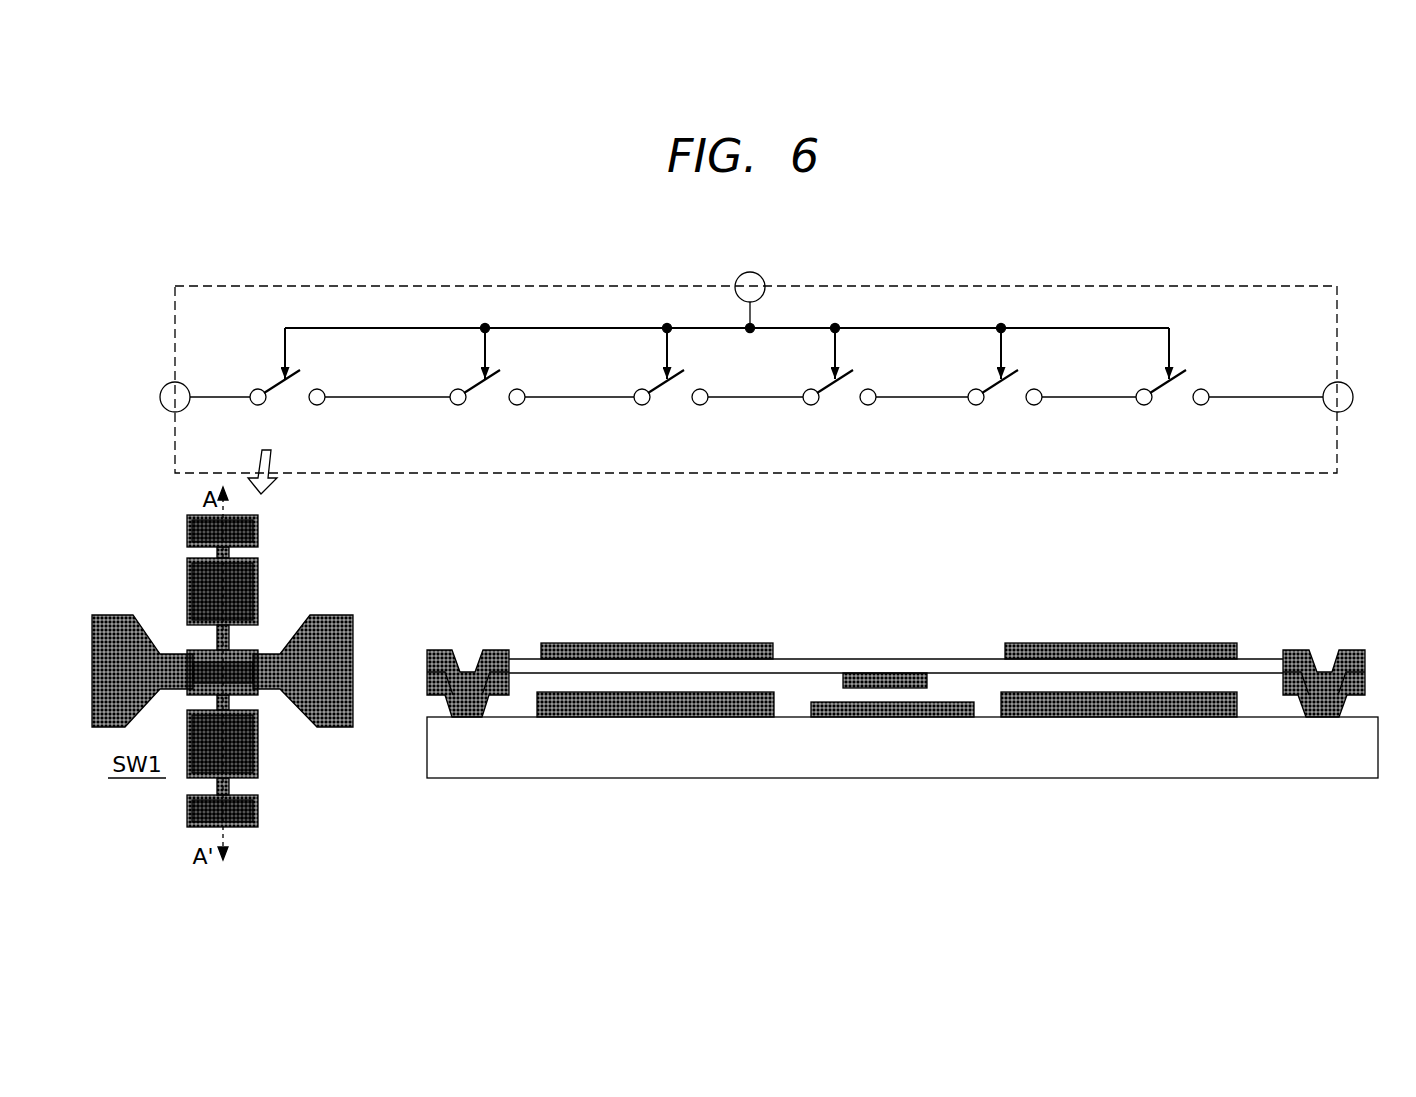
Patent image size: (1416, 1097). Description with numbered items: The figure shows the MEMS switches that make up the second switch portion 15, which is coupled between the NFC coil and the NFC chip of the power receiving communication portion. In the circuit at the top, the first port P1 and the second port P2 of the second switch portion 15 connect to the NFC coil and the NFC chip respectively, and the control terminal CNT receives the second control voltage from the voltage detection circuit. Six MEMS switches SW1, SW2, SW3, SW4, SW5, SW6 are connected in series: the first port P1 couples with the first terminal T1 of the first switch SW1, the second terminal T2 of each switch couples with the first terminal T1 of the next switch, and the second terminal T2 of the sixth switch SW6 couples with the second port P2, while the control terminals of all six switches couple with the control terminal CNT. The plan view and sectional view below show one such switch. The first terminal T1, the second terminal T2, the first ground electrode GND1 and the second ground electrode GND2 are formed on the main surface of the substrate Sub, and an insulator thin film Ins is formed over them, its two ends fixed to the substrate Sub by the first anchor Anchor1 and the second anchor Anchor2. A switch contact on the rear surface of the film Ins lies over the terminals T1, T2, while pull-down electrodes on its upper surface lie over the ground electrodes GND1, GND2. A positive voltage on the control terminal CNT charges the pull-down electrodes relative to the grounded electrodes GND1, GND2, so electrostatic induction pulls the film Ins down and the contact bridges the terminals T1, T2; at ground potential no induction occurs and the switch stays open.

The second switch portion 15 is at (1275, 287).
The control terminal CNT is at (758, 280).
The first port P1 is at (162, 406).
The second port P2 is at (1350, 411).
The first MEMS switch SW1 is at (287, 404).
The second MEMS switch SW2 is at (487, 404).
The third MEMS switch SW3 is at (671, 404).
The fourth MEMS switch SW4 is at (839, 404).
The fifth MEMS switch SW5 is at (1005, 404).
The sixth MEMS switch SW6 is at (1172, 404).
The first terminal T1 is at (223, 398).
The second terminal T2 is at (362, 397).
The first anchor Anchor1 is at (238, 813).
The second anchor Anchor2 is at (243, 532).
The insulator thin film Ins is at (206, 652).
The first ground electrode GND1 is at (632, 705).
The second ground electrode GND2 is at (1078, 708).
The substrate Sub is at (902, 747).